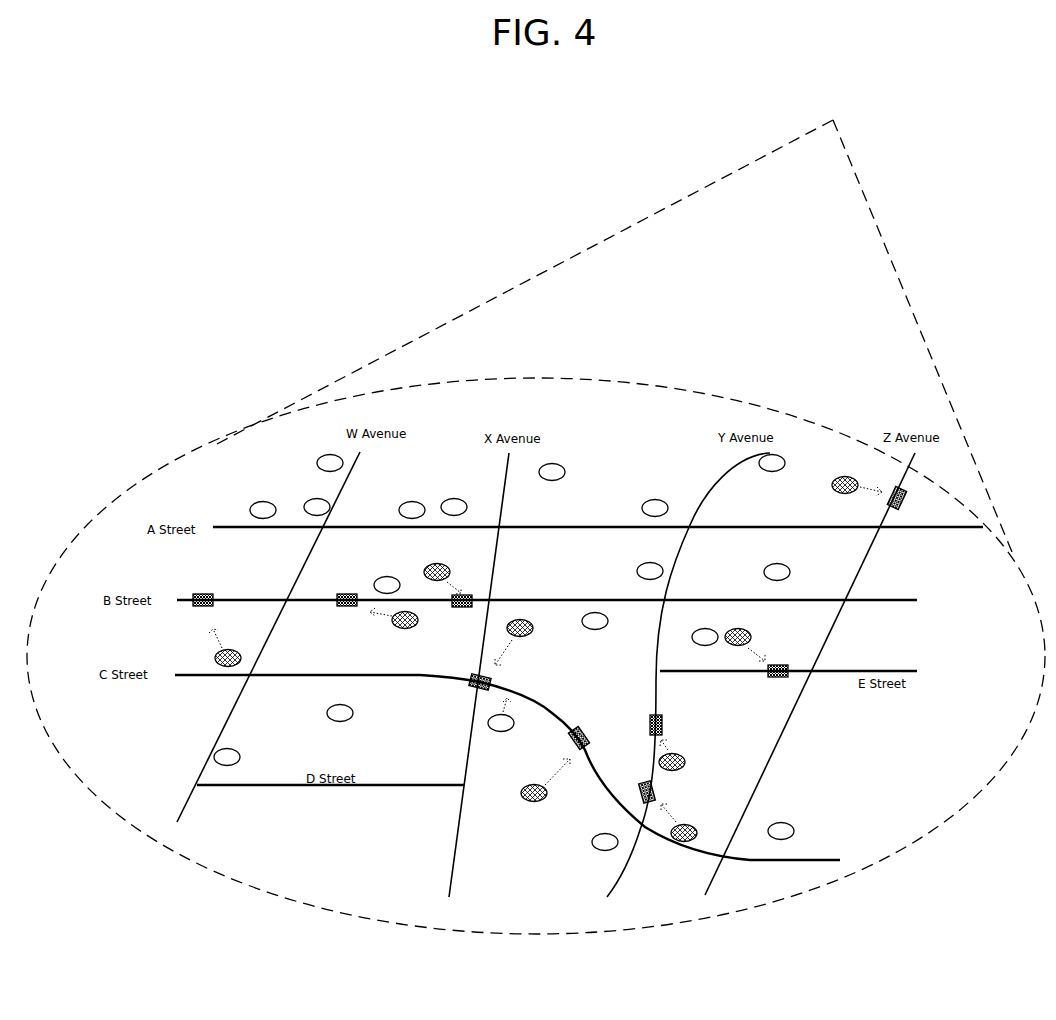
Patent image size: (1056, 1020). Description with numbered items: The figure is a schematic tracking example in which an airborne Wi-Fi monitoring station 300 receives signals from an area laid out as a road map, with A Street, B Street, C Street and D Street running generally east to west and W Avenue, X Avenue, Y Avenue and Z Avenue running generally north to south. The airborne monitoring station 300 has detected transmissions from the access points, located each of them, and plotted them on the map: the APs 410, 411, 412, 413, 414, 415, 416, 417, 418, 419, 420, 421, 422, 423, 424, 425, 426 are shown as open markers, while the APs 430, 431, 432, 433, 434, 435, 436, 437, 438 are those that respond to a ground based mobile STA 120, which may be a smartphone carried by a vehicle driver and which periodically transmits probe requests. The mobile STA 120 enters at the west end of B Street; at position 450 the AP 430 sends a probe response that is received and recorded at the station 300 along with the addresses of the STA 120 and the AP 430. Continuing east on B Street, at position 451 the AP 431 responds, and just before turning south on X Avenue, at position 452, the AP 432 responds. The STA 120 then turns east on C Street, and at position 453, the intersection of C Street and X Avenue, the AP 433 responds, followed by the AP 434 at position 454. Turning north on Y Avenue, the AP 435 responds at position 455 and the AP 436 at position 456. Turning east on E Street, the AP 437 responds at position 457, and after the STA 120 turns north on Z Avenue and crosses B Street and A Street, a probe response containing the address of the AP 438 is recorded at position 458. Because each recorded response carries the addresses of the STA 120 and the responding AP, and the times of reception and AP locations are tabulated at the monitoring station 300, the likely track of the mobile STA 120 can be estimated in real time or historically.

The airborne Wi-Fi monitoring station 300 is at (536, 506).
The ground based mobile STA 120 is at (201, 592).
The AP 410 is at (263, 501).
The AP 411 is at (314, 498).
The AP 412 is at (323, 454).
The AP 413 is at (454, 498).
The AP 414 is at (565, 470).
The AP 415 is at (664, 498).
The AP 416 is at (781, 471).
The AP 417 is at (390, 577).
The AP 418 is at (637, 573).
The AP 419 is at (763, 573).
The AP 420 is at (591, 631).
The AP 421 is at (694, 640).
The AP 422 is at (240, 756).
The AP 423 is at (336, 705).
The AP 424 is at (513, 725).
The AP 425 is at (601, 852).
The AP 426 is at (795, 832).
The AP 430 is at (215, 659).
The AP 431 is at (396, 629).
The AP 432 is at (450, 563).
The AP 433 is at (531, 636).
The AP 434 is at (540, 803).
The AP 435 is at (695, 830).
The AP 436 is at (685, 760).
The AP 437 is at (745, 628).
The AP 438 is at (832, 486).
The position 450 is at (220, 600).
The position 451 is at (348, 594).
The position 452 is at (461, 607).
The position 453 is at (470, 685).
The position 454 is at (586, 732).
The position 455 is at (640, 795).
The position 456 is at (650, 722).
The position 457 is at (786, 678).
The position 458 is at (903, 503).